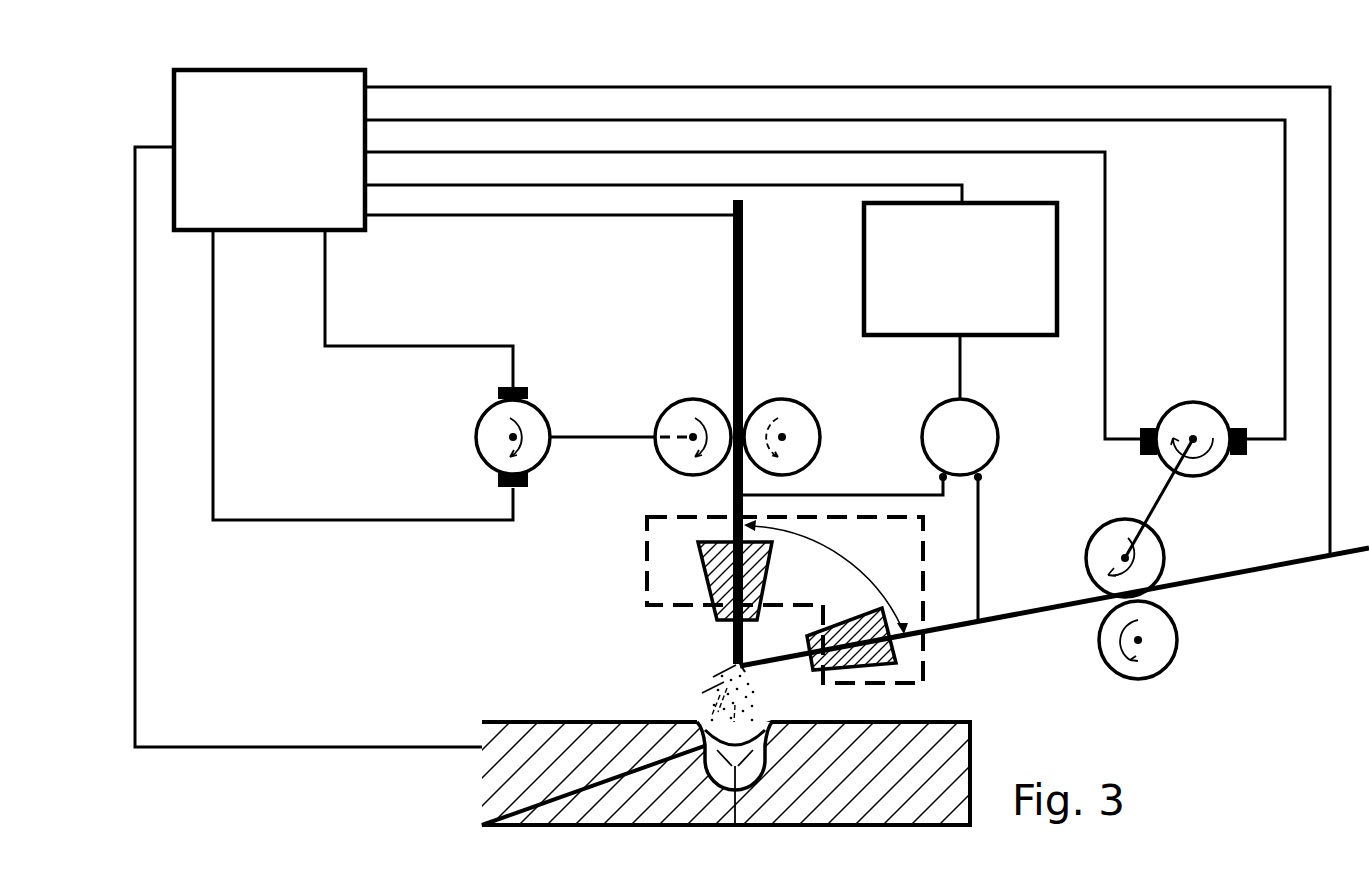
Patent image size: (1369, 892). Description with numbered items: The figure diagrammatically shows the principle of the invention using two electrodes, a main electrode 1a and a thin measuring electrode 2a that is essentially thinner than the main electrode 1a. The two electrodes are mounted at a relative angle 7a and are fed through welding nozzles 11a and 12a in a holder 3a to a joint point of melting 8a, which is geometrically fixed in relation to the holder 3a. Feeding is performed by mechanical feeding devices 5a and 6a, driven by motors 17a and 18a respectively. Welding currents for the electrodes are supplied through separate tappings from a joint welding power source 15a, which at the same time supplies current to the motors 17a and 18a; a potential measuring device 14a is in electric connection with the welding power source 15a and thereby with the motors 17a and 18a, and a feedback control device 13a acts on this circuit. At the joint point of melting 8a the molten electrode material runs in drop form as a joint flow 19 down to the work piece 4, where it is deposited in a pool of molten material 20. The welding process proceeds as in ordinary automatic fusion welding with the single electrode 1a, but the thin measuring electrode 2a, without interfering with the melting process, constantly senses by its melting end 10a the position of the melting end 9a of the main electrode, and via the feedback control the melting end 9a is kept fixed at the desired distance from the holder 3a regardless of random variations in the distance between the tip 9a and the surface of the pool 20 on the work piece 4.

The main electrode 1a is at (733, 266).
The thin measuring electrode 2a is at (1268, 577).
The holder 3a is at (660, 565).
The work piece 4 is at (928, 743).
The mechanical feeding device 5a is at (777, 412).
The mechanical feeding device 6a is at (1157, 626).
The relative angle 7a is at (843, 552).
The joint point of melting 8a is at (702, 693).
The melting end of the main electrode 9a is at (713, 677).
The melting end of the measuring electrode 10a is at (744, 668).
The welding nozzle 11a is at (762, 567).
The welding nozzle 12a is at (848, 630).
The feedback control device 13a is at (888, 233).
The potential measuring device 14a is at (975, 420).
The welding power source 15a is at (310, 205).
The motor 17a is at (495, 422).
The motor 18a is at (1205, 425).
The joint flow 19 is at (740, 712).
The pool of molten material 20 is at (772, 735).